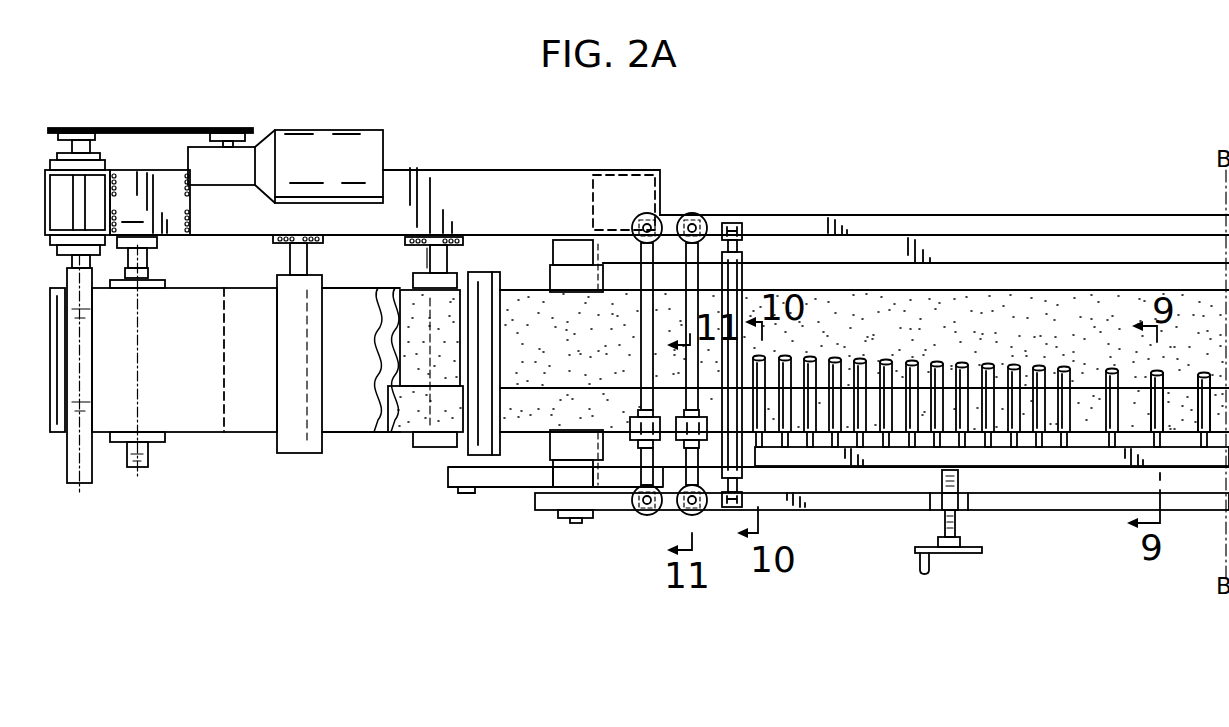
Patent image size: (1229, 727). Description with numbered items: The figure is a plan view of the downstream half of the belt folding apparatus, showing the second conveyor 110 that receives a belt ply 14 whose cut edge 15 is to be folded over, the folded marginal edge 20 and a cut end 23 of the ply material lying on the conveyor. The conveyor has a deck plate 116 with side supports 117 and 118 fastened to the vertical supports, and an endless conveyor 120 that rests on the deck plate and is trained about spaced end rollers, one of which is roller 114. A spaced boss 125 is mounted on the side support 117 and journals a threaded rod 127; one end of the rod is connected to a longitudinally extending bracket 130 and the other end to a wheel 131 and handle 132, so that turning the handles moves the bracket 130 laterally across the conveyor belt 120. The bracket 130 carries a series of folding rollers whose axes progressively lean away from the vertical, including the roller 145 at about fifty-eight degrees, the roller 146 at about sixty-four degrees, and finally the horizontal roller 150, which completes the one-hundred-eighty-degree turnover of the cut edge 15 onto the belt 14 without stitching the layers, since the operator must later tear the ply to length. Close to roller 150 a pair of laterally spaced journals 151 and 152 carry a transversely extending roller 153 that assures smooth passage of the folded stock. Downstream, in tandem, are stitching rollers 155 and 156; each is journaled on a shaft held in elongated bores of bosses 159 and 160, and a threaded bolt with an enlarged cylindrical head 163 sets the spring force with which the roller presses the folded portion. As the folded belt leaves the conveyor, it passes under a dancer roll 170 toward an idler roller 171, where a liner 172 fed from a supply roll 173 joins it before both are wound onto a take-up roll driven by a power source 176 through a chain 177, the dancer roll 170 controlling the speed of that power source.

The belt ply 14 is at (398, 305).
The cut edge of belt 15 is at (403, 385).
The folded marginal edge 20 is at (402, 432).
The cut end of ply 23 is at (398, 290).
The second conveyor 110 is at (1108, 160).
The roller 114 is at (560, 482).
The deck plate 116 is at (977, 250).
The side support 117 is at (853, 507).
The side support 118 is at (873, 222).
The endless conveyor 120 is at (1047, 275).
The boss 125 is at (942, 513).
The threaded rod 127 is at (958, 527).
The longitudinally extending bracket 130 is at (1020, 460).
The wheel 131 is at (965, 553).
The handle 132 is at (923, 572).
The roller 145 is at (1203, 387).
The roller 146 is at (1158, 417).
The roller 150 is at (758, 368).
The journal 151 is at (743, 503).
The journal 152 is at (743, 228).
The transversely extending roller 153 is at (742, 280).
The stitching roller 155 is at (678, 423).
The stitching roller 156 is at (637, 430).
The boss 159 is at (673, 507).
The boss 160 is at (700, 211).
The cylindrical head 163 is at (682, 213).
The dancer roll 170 is at (483, 445).
The idler roller 171 is at (427, 445).
The liner 172 is at (340, 417).
The supply roll 173 is at (183, 417).
The power source 176 is at (303, 126).
The chain 177 is at (162, 127).